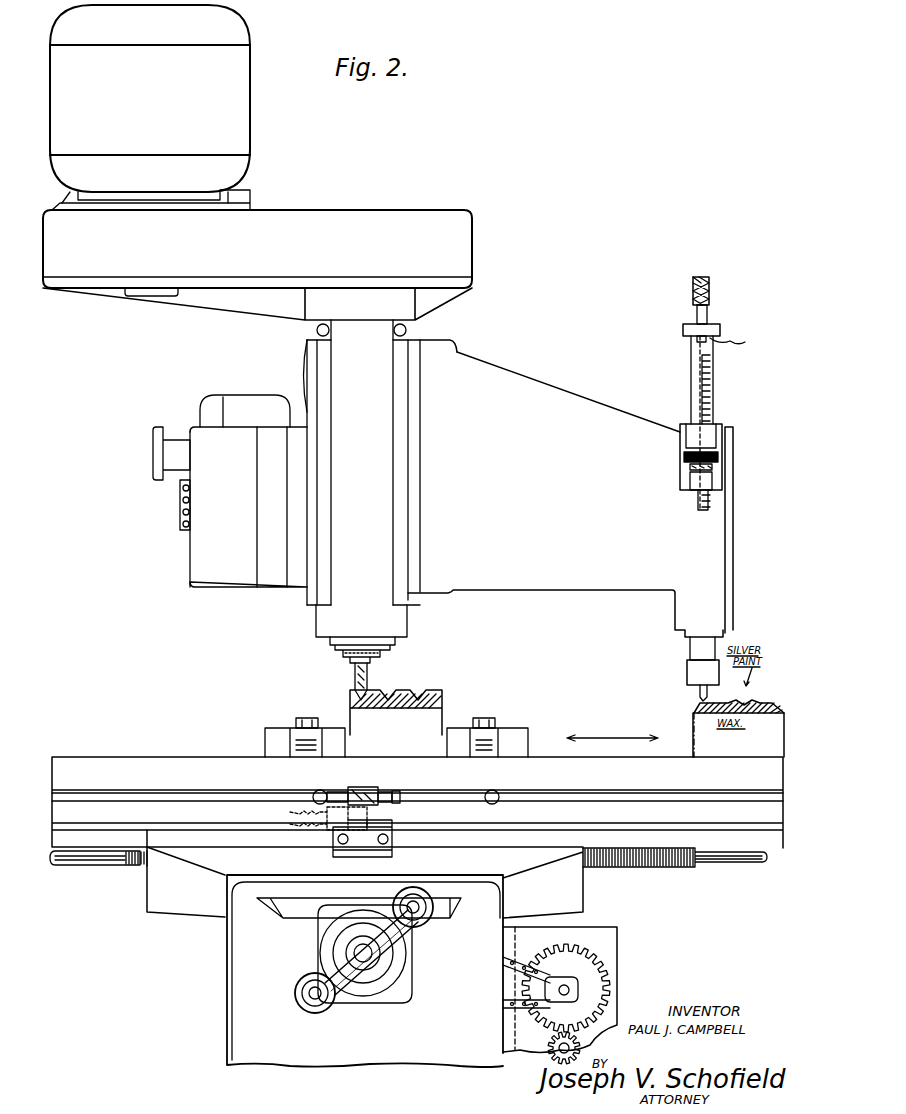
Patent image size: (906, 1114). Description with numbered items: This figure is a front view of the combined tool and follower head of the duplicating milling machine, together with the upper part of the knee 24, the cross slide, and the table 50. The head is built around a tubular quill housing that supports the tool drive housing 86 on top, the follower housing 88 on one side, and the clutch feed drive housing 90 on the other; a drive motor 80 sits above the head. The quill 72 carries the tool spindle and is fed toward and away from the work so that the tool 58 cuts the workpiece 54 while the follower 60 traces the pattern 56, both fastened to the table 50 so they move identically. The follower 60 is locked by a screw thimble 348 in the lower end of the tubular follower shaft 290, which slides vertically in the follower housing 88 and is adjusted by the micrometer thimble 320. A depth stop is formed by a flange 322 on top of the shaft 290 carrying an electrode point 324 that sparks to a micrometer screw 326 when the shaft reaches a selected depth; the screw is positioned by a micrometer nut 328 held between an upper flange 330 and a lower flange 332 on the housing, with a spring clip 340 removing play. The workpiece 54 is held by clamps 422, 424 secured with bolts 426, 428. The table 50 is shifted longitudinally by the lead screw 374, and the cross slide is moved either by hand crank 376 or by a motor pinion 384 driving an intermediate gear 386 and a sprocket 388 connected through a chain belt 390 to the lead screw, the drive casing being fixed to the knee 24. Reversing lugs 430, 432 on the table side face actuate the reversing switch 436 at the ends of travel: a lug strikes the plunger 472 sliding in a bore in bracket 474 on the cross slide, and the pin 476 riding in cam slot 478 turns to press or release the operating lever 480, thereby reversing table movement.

The knee 24 is at (233, 1032).
The table 50 is at (133, 770).
The workpiece 54 is at (430, 690).
The pattern 56 is at (702, 702).
The tool 58 is at (353, 682).
The follower 60 is at (697, 678).
The quill 72 is at (328, 642).
The motor 80 is at (253, 85).
The tool drive housing 86 is at (477, 250).
The follower housing 88 is at (512, 368).
The clutch feed drive housing 90 is at (200, 560).
The follower shaft 290 is at (690, 378).
The micrometer thimble 320 is at (694, 293).
The flange 322 is at (721, 330).
The electrode point 324 is at (697, 340).
The micrometer screw 326 is at (706, 380).
The micrometer nut 328 is at (718, 456).
The upper flange 330 is at (705, 440).
The lower flange 332 is at (708, 476).
The spring clip 340 is at (713, 467).
The screw thimble 348 is at (690, 655).
The table lead screw 374 is at (650, 868).
The crank 376 is at (300, 982).
The motor pinion 384 is at (600, 1040).
The intermediate gear 386 is at (578, 960).
The sprocket 388 is at (578, 985).
The chain belt 390 is at (514, 962).
The clamp 422 is at (287, 730).
The clamp 424 is at (508, 727).
The bolt 426 is at (307, 717).
The bolt 428 is at (484, 717).
The reversing lug 430 is at (315, 793).
The reversing lug 432 is at (498, 794).
The reversing switch 436 is at (325, 828).
The plunger 472 is at (388, 806).
The bracket 474 is at (355, 787).
The pin 476 is at (350, 796).
The cam slot 478 is at (382, 795).
The operating lever 480 is at (380, 818).